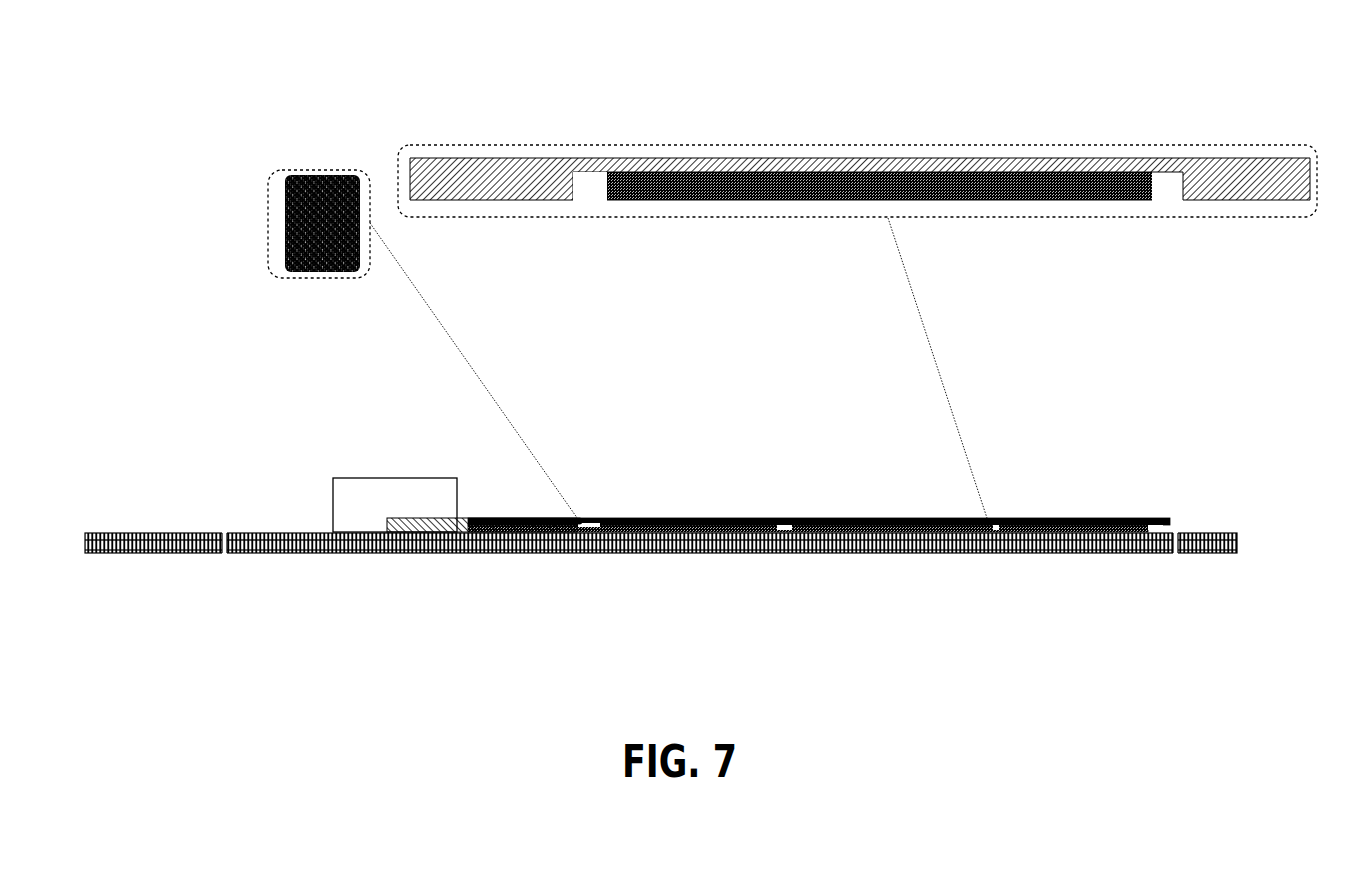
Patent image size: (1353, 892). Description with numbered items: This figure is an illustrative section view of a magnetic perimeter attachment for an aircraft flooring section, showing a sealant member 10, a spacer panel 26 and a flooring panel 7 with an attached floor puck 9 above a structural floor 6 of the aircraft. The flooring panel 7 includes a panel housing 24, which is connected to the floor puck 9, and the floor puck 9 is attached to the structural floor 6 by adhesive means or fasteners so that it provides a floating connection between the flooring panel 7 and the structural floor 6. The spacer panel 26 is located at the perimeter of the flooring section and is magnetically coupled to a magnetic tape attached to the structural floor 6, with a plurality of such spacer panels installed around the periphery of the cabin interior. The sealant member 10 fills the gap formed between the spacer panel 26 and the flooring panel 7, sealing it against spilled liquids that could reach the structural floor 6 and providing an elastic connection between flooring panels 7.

The structural floor 6 is at (844, 558).
The flooring panel 7 is at (857, 308).
The floor puck 9 is at (794, 204).
The sealant member 10 is at (330, 170).
The panel housing 24 is at (588, 184).
The spacer panel 26 is at (470, 518).